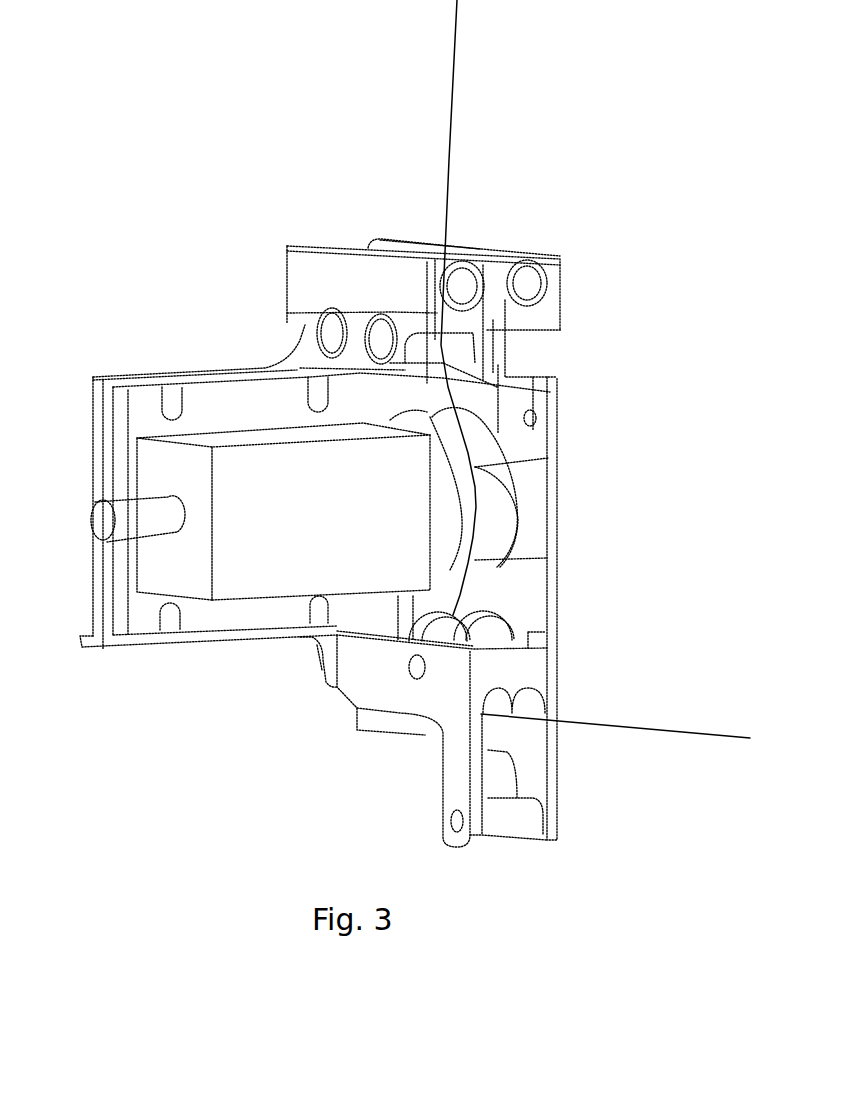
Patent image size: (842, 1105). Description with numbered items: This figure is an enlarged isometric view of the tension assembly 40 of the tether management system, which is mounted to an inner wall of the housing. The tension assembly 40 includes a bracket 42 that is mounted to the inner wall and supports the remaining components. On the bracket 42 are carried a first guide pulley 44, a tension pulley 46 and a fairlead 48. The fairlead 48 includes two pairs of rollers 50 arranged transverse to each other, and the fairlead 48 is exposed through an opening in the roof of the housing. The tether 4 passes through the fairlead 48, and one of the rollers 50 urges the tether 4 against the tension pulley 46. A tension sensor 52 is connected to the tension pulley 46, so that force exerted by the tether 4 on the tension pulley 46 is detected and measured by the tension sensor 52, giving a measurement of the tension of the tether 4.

The tether 4 is at (449, 160).
The tension assembly 40 is at (142, 241).
The bracket 42 is at (285, 352).
The first guide pulley 44 is at (493, 633).
The tension pulley 46 is at (492, 443).
The fairlead 48 is at (470, 233).
The rollers 50 is at (487, 262).
The tension sensor 52 is at (278, 588).